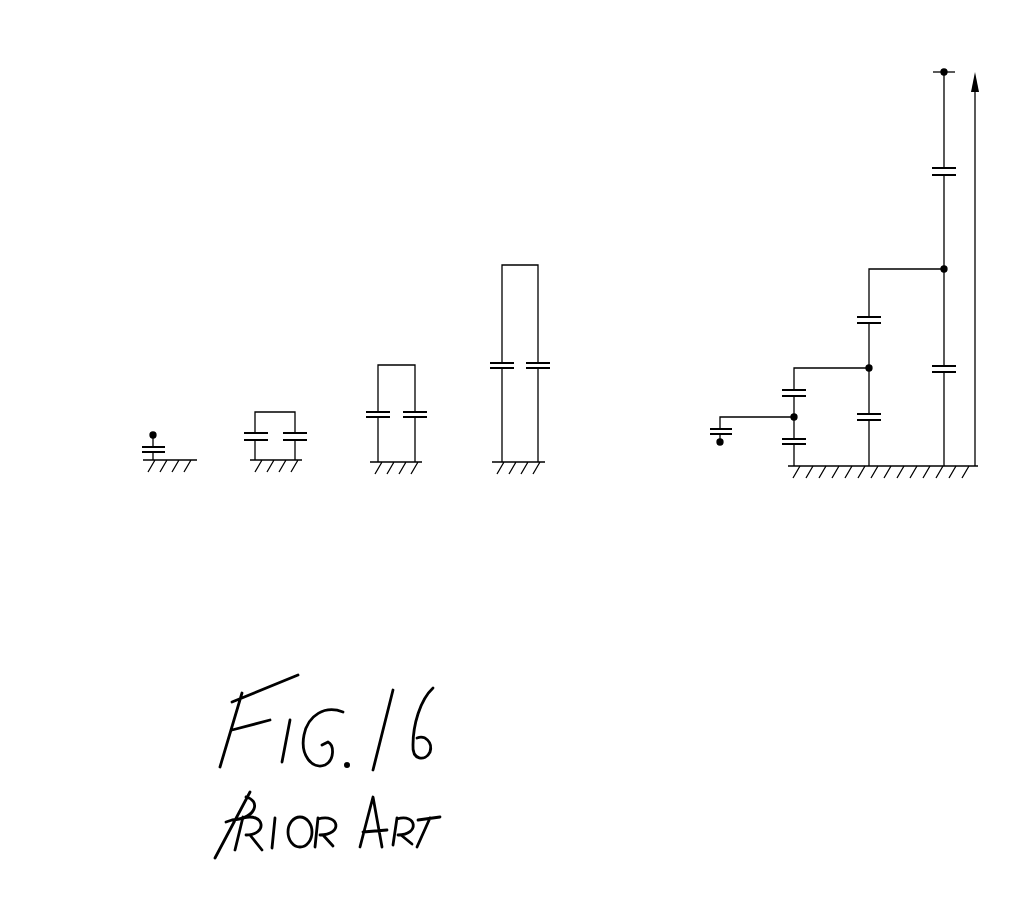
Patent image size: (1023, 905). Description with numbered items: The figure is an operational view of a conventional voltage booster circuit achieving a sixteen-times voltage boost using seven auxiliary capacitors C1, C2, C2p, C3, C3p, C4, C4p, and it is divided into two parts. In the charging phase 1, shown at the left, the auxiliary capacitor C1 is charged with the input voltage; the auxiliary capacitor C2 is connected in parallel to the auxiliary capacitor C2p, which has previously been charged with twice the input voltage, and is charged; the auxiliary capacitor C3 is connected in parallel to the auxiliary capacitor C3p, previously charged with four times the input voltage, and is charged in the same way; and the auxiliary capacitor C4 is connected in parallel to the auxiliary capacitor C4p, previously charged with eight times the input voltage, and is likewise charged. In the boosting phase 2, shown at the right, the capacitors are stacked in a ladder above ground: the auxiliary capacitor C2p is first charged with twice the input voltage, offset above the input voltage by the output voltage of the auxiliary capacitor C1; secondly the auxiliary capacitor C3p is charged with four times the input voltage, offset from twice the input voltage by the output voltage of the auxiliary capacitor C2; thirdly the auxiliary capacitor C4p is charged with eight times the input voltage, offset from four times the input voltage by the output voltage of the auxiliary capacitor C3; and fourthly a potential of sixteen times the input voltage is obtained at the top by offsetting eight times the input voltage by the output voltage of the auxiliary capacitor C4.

The charging phase 1 is at (326, 242).
The boosting phase 2 is at (813, 248).
The auxiliary capacitor C1 is at (420, 439).
The auxiliary capacitor C2 is at (513, 410).
The auxiliary capacitor C2p is at (544, 439).
The auxiliary capacitor C3 is at (610, 363).
The auxiliary capacitor C3p is at (642, 416).
The auxiliary capacitor C4 is at (709, 264).
The auxiliary capacitor C4p is at (741, 367).